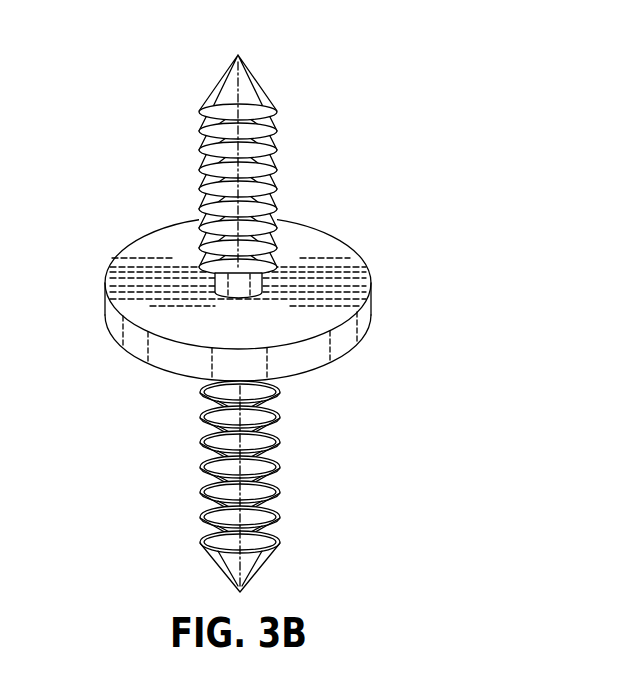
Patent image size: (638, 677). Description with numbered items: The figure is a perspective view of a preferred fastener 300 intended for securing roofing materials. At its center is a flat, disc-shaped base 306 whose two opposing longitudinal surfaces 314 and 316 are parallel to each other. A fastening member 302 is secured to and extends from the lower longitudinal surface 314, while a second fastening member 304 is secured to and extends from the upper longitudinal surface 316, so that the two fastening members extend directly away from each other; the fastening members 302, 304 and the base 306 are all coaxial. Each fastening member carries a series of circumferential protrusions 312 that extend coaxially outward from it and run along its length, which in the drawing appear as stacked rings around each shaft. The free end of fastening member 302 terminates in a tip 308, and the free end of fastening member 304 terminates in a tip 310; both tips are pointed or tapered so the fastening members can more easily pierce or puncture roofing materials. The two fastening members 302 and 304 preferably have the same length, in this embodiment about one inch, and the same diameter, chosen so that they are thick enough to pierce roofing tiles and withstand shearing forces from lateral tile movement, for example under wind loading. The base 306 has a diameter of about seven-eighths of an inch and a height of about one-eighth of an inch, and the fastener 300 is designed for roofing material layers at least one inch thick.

The fastener 300 is at (226, 299).
The fastening member 302 is at (244, 486).
The fastening member 304 is at (227, 170).
The base 306 is at (209, 286).
The tip 308 is at (217, 563).
The tip 310 is at (221, 83).
The circumferential protrusions 312 is at (208, 177).
The longitudinal surface 314 is at (147, 372).
The longitudinal surface 316 is at (297, 253).